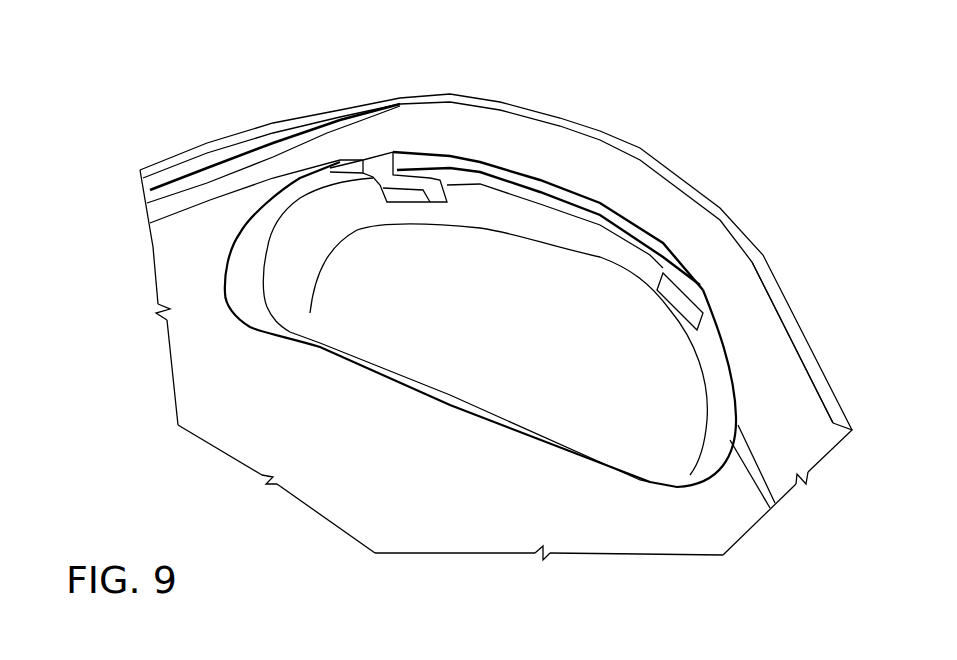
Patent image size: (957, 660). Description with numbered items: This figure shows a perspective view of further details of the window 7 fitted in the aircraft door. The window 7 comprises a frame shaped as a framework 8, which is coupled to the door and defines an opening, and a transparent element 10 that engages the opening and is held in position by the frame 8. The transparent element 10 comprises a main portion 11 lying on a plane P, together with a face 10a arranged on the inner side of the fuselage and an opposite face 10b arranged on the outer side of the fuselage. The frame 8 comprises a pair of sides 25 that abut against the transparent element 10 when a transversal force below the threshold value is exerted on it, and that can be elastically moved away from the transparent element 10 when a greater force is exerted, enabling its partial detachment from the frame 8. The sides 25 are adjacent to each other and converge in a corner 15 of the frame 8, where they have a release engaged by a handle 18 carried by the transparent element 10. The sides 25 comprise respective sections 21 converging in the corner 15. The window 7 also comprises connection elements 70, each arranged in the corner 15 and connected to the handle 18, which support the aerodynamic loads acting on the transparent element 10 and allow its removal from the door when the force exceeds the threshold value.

The window 7 is at (470, 528).
The frame 8 is at (405, 127).
The transparent element 10 is at (196, 410).
The face 10a is at (730, 524).
The face 10b is at (150, 372).
The main portion 11 is at (668, 530).
The corner 15 is at (505, 92).
The handle 18 is at (532, 268).
The sections 21 is at (312, 150).
The sides 25 is at (230, 180).
The connection elements 70 is at (412, 215).